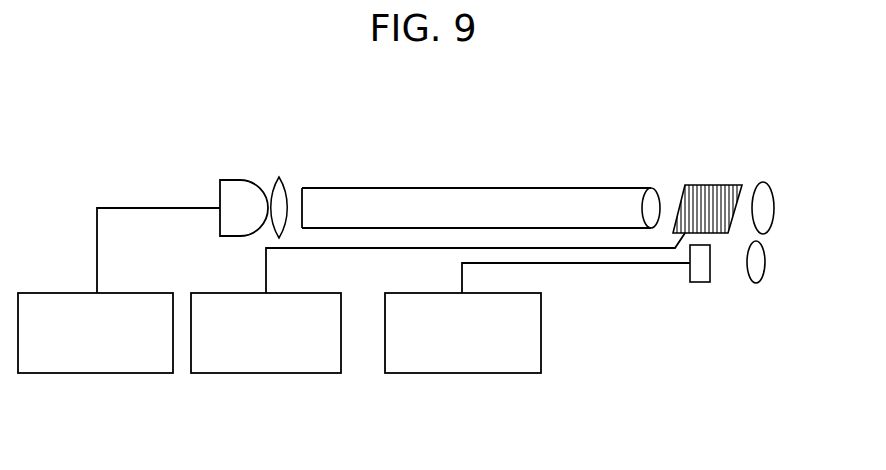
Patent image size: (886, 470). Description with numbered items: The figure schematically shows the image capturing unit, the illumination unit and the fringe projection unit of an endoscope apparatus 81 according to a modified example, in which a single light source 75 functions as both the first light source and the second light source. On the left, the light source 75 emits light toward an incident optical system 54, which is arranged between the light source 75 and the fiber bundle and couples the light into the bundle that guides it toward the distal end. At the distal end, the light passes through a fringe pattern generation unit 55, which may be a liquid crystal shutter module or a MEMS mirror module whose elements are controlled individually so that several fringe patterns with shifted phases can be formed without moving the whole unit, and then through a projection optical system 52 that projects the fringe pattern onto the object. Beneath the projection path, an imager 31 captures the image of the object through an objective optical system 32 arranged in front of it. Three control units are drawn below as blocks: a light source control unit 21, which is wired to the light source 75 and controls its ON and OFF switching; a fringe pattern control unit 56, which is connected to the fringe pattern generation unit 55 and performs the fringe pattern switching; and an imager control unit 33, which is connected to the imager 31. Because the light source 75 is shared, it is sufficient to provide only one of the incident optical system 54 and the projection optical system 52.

The single light source 75 is at (238, 178).
The incident optical system 54 is at (286, 190).
The endoscope apparatus 81 is at (618, 152).
The fringe pattern generation unit 55 is at (713, 183).
The projection optical system 52 is at (775, 208).
The imager 31 is at (698, 284).
The objective optical system 32 is at (757, 284).
The light source control unit 21 is at (96, 375).
The fringe pattern control unit 56 is at (267, 375).
The imager control unit 33 is at (457, 375).